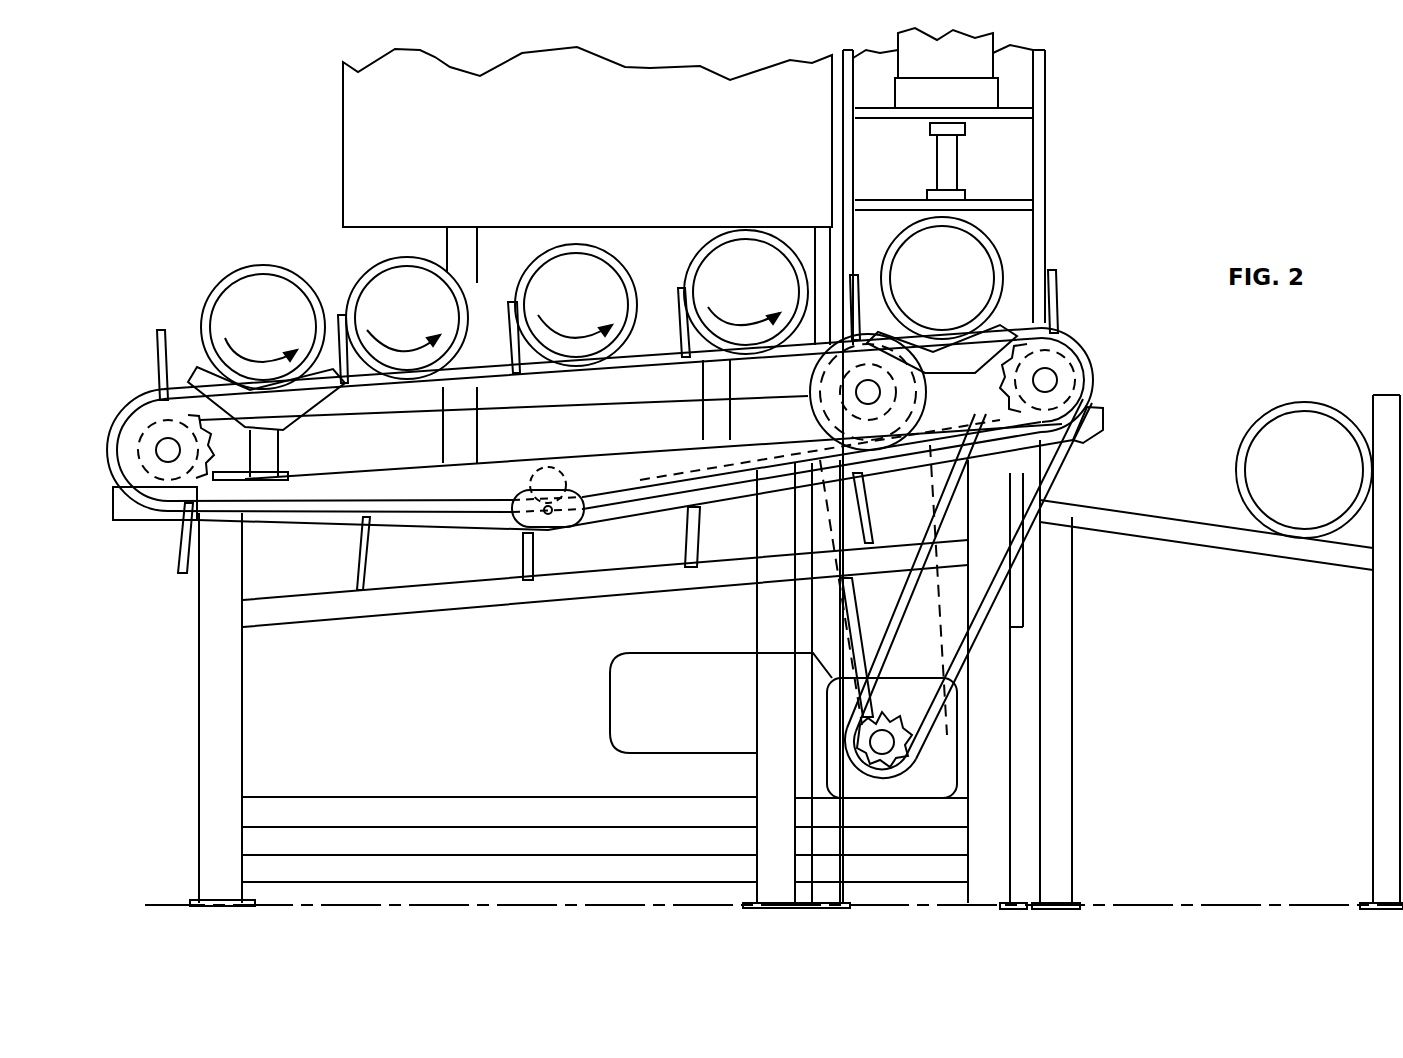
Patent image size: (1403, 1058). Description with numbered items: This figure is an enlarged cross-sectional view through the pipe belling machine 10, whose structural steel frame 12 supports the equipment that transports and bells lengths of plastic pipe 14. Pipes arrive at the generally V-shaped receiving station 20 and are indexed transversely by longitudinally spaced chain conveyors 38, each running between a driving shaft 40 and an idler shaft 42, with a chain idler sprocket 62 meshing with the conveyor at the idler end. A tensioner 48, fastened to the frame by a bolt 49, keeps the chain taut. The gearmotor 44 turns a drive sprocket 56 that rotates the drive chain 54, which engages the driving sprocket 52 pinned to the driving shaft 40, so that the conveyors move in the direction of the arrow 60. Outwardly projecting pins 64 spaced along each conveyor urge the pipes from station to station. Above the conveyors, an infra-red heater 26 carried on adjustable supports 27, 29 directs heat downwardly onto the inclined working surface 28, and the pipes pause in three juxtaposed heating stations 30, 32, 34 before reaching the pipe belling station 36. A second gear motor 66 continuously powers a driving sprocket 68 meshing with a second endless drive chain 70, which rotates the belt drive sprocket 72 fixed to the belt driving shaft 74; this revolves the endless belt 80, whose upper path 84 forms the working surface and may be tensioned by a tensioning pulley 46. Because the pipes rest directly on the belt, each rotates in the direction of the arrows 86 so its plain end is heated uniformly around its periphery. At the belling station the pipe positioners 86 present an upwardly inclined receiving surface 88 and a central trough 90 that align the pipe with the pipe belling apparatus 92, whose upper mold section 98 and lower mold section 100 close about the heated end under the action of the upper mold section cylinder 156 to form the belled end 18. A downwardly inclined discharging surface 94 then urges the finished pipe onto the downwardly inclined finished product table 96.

The pipe belling machine 10 is at (1083, 332).
The structural steel frame 12 is at (215, 668).
The plastic pipe 14 is at (250, 268).
The belled end 18 is at (1315, 403).
The receiving station 20 is at (200, 363).
The infra-red heater 26 is at (655, 82).
The vertically adjustable support 27 is at (407, 306).
The inclined working surface 28 is at (643, 300).
The vertically adjustable support 29 is at (702, 235).
The heating station 30 is at (263, 311).
The heating station 32 is at (613, 242).
The heating station 34 is at (800, 237).
The pipe belling station 36 is at (1050, 172).
The chain conveyor 38 is at (683, 385).
The driving shaft 40 is at (1050, 380).
The idler shaft 42 is at (165, 458).
The gearmotor 44 is at (613, 727).
The tensioning pulley 46 is at (562, 465).
The tensioner 48 is at (573, 517).
The bolt 49 is at (550, 515).
The driving sprocket 52 is at (1090, 408).
The drive chain 54 is at (977, 630).
The drive sprocket 56 is at (863, 750).
The arrow 60 is at (653, 419).
The chain idler sprocket 62 is at (200, 457).
The pin 64 is at (160, 360).
The second gear motor 66 is at (947, 773).
The driving sprocket 68 is at (947, 737).
The second endless drive chain 70 is at (940, 657).
The belt drive sprocket 72 is at (830, 405).
The belt driving shaft 74 is at (872, 395).
The endless belt 80 is at (497, 373).
The upper path 84 is at (812, 340).
The arrows / pipe positioners 86 is at (243, 357).
The upwardly inclined receiving surface 88 is at (867, 340).
The trough 90 is at (947, 343).
The pipe belling apparatus 92 is at (993, 97).
The downwardly inclined discharging surface 94 is at (1181, 275).
The finished product table 96 is at (1152, 500).
The upper mold section 98 is at (1020, 232).
The lower mold section 100 is at (1013, 297).
The upper mold section cylinder 156 is at (980, 50).